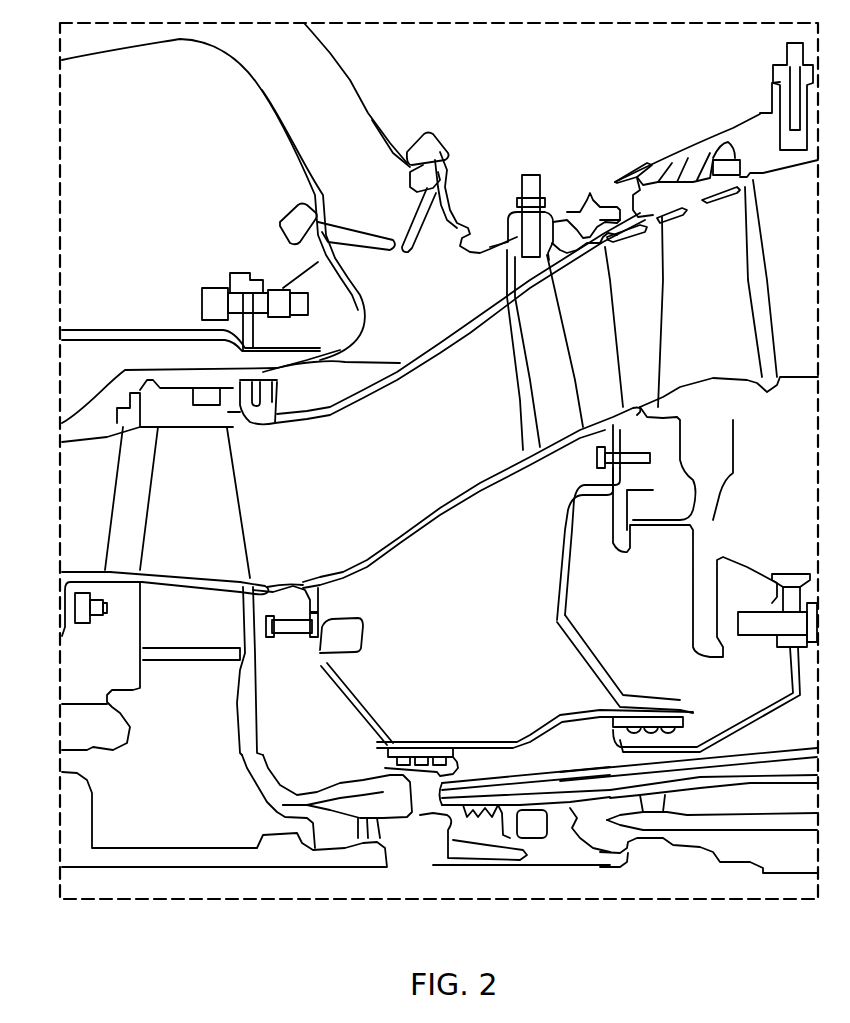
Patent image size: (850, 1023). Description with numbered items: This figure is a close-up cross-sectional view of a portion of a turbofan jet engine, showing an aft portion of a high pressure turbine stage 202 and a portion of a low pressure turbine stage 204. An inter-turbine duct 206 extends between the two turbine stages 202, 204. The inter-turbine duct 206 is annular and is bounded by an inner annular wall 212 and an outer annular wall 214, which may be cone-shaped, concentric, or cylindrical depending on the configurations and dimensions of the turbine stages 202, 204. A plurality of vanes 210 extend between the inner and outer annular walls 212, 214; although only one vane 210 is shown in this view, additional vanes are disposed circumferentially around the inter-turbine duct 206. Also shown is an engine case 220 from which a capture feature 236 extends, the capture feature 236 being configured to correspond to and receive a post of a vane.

The high pressure turbine stage 202 is at (88, 505).
The low pressure turbine stage 204 is at (630, 192).
The inter-turbine duct 206 is at (462, 327).
The vane 210 is at (550, 325).
The inner annular wall 212 is at (533, 450).
The outer annular wall 214 is at (497, 307).
The engine case 220 is at (568, 213).
The capture feature 236 is at (528, 213).